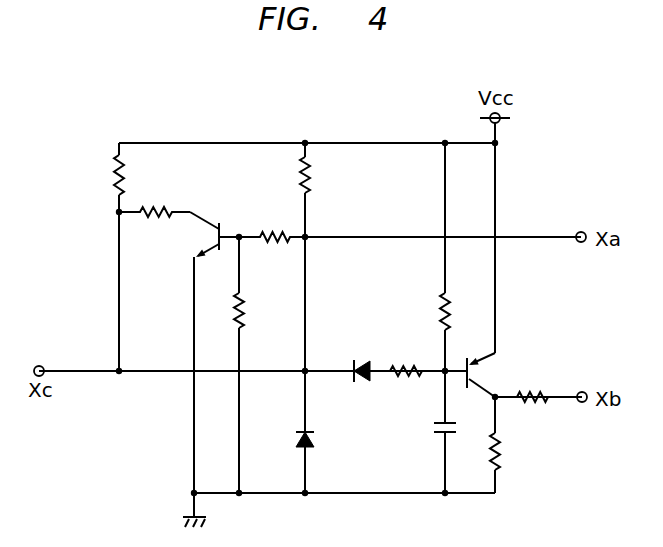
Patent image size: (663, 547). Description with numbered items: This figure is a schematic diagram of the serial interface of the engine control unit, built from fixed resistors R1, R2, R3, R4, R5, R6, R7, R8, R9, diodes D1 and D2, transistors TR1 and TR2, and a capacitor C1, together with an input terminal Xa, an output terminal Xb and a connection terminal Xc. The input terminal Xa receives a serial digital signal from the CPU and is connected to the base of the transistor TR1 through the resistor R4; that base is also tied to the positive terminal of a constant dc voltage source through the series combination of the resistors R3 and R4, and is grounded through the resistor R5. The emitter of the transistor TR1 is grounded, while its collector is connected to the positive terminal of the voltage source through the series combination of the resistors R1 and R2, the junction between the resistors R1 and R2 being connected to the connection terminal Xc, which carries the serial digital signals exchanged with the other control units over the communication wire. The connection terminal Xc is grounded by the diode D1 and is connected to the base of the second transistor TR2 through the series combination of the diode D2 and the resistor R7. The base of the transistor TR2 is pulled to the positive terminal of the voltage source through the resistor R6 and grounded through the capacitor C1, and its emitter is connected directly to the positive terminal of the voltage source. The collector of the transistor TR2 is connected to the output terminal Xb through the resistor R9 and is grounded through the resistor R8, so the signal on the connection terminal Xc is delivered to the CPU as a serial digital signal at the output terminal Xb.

The fixed resistor R1 is at (125, 178).
The fixed resistor R2 is at (158, 216).
The fixed resistor R3 is at (310, 176).
The fixed resistor R4 is at (278, 241).
The fixed resistor R5 is at (244, 305).
The fixed resistor R6 is at (440, 312).
The fixed resistor R7 is at (410, 378).
The fixed resistor R8 is at (500, 462).
The fixed resistor R9 is at (537, 403).
The transistor TR1 is at (227, 222).
The transistor TR2 is at (472, 379).
The diode D1 is at (307, 430).
The diode D2 is at (355, 362).
The capacitor C1 is at (435, 432).